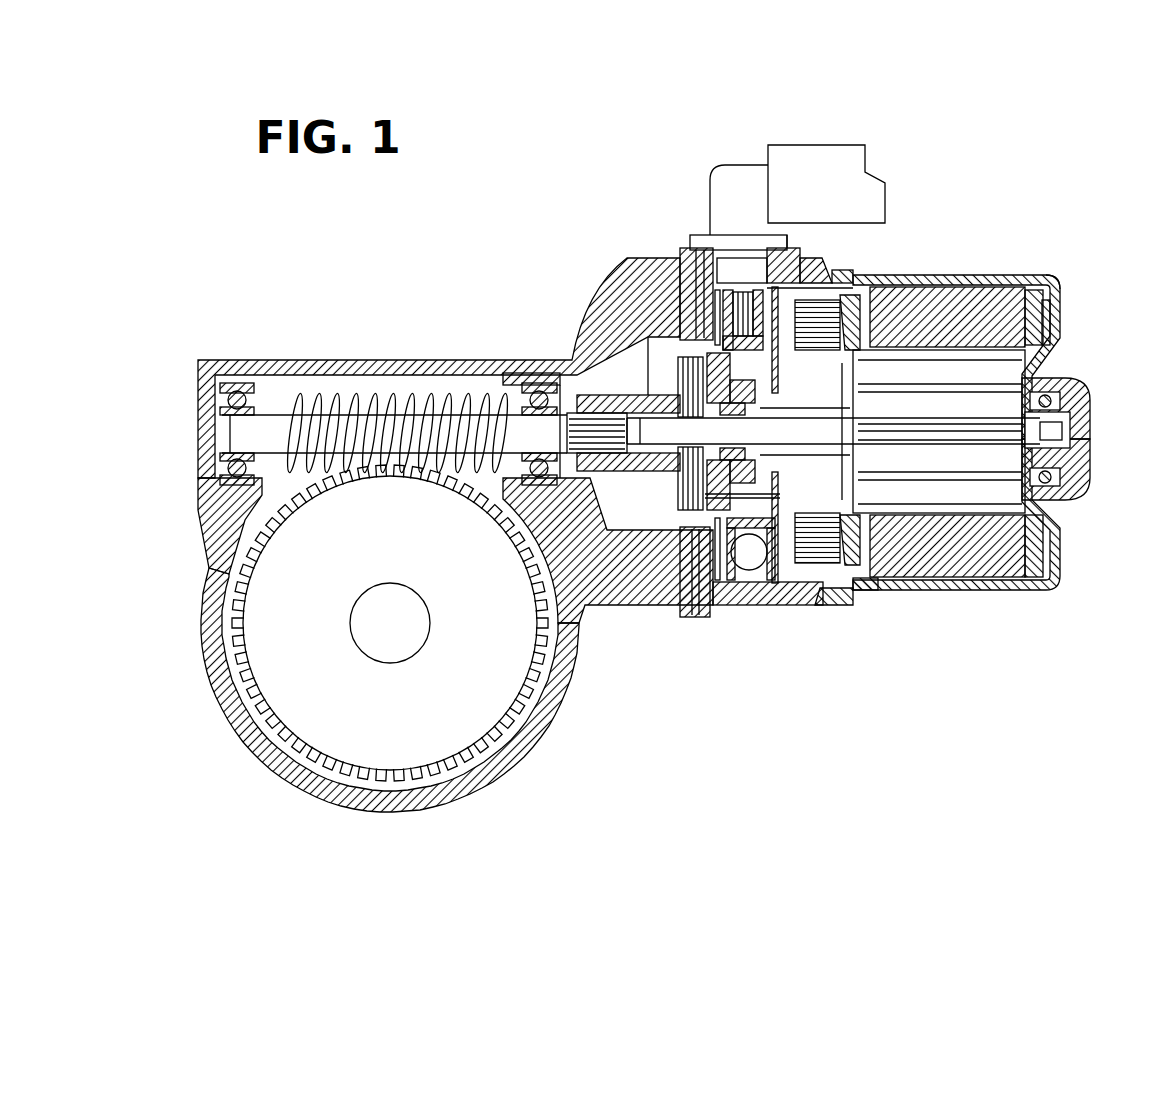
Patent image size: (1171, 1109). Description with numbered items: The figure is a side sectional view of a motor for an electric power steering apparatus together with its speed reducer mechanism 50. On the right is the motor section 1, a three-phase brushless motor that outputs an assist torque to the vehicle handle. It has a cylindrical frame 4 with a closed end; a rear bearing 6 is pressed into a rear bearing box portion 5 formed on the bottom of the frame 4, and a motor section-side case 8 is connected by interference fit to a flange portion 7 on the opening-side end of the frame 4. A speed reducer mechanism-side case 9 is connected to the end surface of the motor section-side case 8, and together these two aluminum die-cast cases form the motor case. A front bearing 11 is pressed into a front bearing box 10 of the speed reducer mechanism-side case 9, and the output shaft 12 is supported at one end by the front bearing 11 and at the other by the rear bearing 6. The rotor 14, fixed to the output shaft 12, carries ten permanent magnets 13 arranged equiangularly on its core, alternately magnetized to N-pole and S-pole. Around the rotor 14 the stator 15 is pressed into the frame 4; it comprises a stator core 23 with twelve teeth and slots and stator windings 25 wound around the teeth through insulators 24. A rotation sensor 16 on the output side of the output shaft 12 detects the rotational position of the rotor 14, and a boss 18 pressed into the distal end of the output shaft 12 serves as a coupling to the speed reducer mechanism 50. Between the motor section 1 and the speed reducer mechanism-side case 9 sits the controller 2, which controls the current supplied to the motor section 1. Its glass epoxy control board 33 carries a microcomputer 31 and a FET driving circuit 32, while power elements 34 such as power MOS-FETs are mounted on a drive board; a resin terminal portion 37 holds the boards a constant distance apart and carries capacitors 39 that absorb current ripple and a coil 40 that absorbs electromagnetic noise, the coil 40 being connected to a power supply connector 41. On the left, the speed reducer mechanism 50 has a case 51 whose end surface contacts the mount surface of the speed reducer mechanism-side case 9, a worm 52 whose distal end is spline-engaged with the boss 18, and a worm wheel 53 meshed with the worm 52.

The motor section 1 is at (970, 597).
The controller 2 is at (728, 272).
The frame 4 is at (1000, 592).
The rear bearing box portion 5 is at (1060, 500).
The rear bearing 6 is at (1057, 380).
The flange portion 7 is at (853, 596).
The motor section-side case 8 is at (830, 605).
The speed reducer mechanism-side case 9 is at (698, 610).
The front bearing box 10 is at (752, 392).
The front bearing 11 is at (772, 483).
The output shaft 12 is at (870, 275).
The permanent magnets 13 is at (922, 455).
The rotor 14 is at (962, 372).
The stator 15 is at (1003, 296).
The rotation sensor 16 is at (628, 608).
The boss 18 is at (612, 393).
The stator core 23 is at (980, 300).
The insulators 24 is at (1062, 290).
The stator windings 25 is at (1047, 316).
The microcomputer 31 is at (803, 255).
The FET driving circuit 32 is at (815, 606).
The control board 33 is at (783, 606).
The power elements 34 is at (690, 285).
The terminal portion 37 is at (757, 608).
The capacitors 39 is at (747, 570).
The coil 40 is at (745, 255).
The power supply connector 41 is at (840, 158).
The speed reducer mechanism 50 is at (337, 358).
The case 51 is at (238, 358).
The worm 52 is at (508, 422).
The worm wheel 53 is at (395, 733).